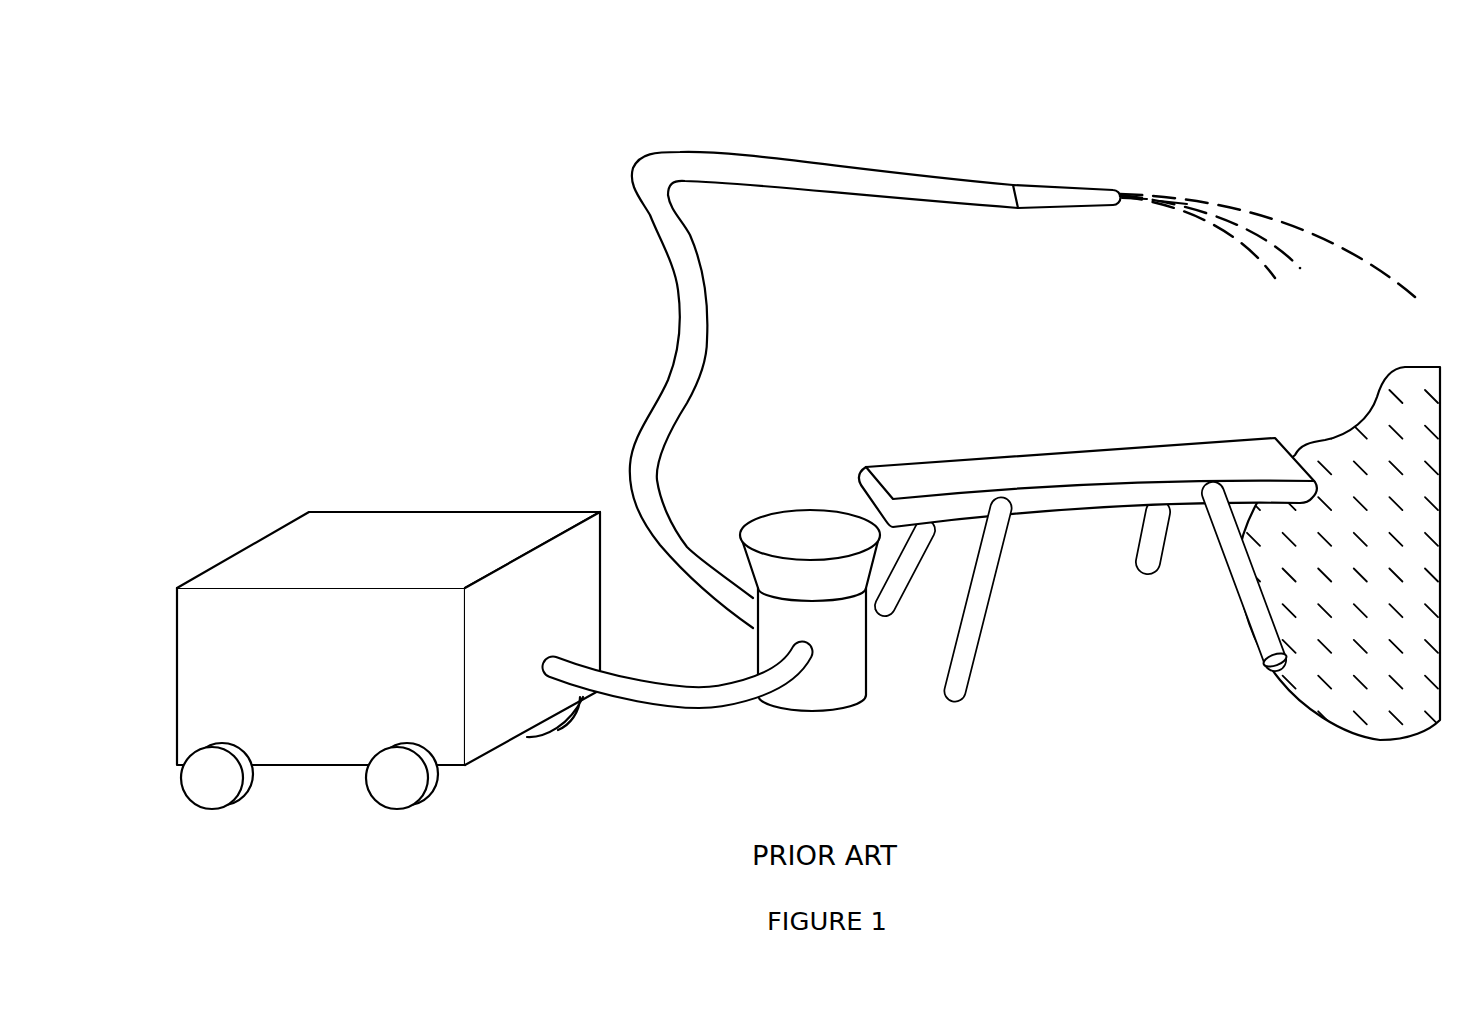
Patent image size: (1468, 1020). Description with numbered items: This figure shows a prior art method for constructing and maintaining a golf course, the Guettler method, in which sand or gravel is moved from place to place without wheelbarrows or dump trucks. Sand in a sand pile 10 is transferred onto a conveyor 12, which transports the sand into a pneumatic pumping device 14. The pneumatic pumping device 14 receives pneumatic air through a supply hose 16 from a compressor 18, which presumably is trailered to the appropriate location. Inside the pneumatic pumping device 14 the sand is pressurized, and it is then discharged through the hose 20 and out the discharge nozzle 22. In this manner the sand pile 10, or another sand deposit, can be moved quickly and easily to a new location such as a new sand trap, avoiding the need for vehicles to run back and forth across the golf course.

The sand pile 10 is at (1312, 707).
The conveyor 12 is at (1054, 452).
The pneumatic pumping device 14 is at (845, 510).
The supply hose 16 is at (624, 700).
The compressor 18 is at (542, 512).
The hose 20 is at (653, 223).
The discharge nozzle 22 is at (1097, 187).